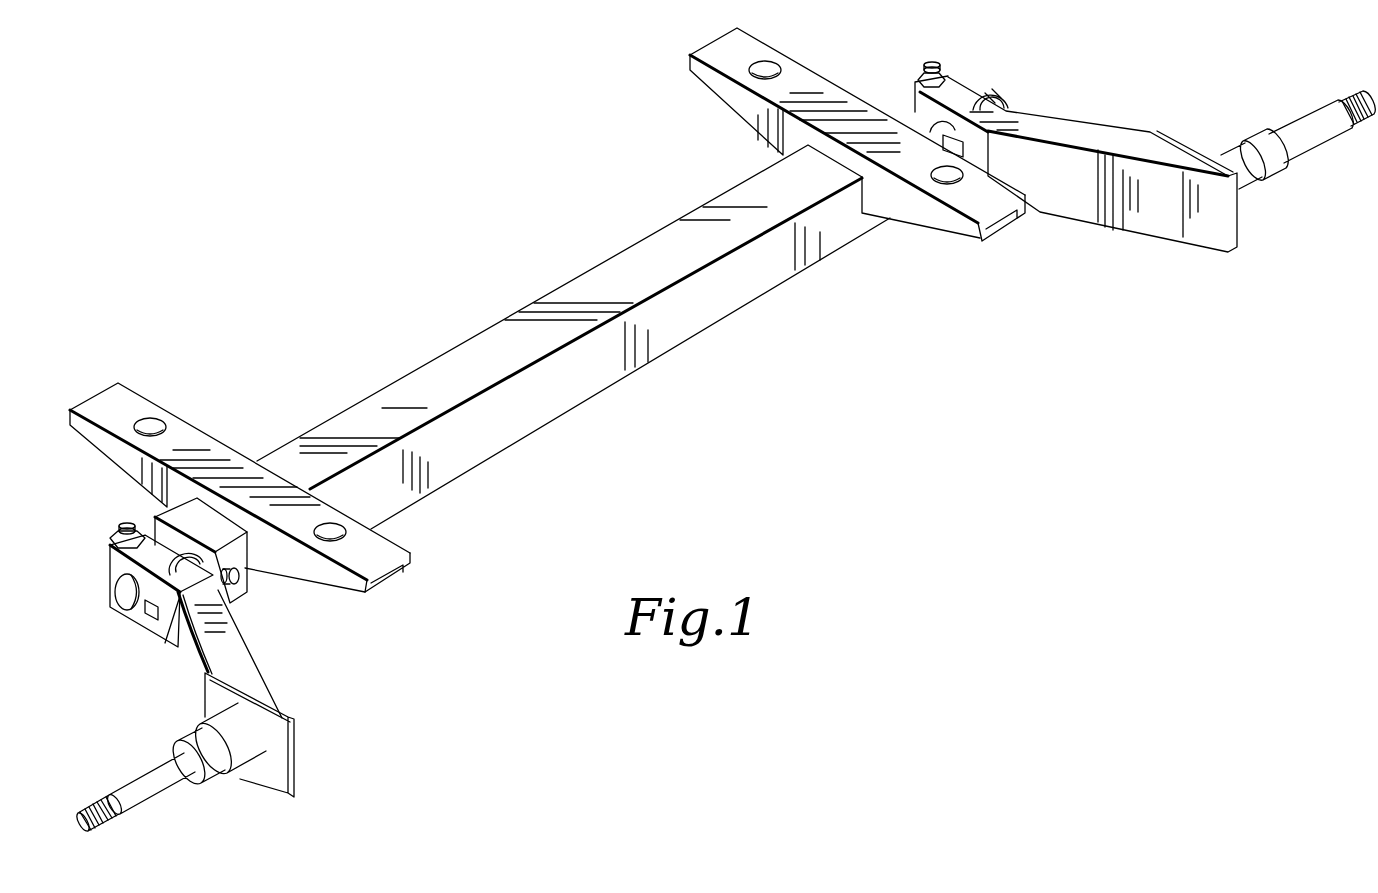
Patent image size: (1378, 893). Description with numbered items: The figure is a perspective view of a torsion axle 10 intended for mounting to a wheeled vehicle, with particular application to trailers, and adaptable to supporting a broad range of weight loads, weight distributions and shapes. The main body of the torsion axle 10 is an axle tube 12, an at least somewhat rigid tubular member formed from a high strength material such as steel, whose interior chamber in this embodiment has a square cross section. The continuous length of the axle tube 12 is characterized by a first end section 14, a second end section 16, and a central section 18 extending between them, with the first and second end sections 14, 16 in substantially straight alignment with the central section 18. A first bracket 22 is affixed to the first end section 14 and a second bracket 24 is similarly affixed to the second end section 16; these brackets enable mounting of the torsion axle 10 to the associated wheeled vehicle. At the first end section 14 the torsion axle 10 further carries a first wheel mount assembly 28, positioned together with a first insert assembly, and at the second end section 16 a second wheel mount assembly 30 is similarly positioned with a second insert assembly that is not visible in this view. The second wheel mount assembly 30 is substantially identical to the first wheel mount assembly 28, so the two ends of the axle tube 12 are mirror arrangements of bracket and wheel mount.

The torsion axle 10 is at (434, 192).
The axle tube 12 is at (482, 355).
The first end section 14 is at (252, 578).
The second end section 16 is at (870, 227).
The central section 18 is at (567, 387).
The first bracket 22 is at (125, 408).
The second bracket 24 is at (742, 57).
The first wheel mount assembly 28 is at (245, 680).
The second wheel mount assembly 30 is at (1098, 133).